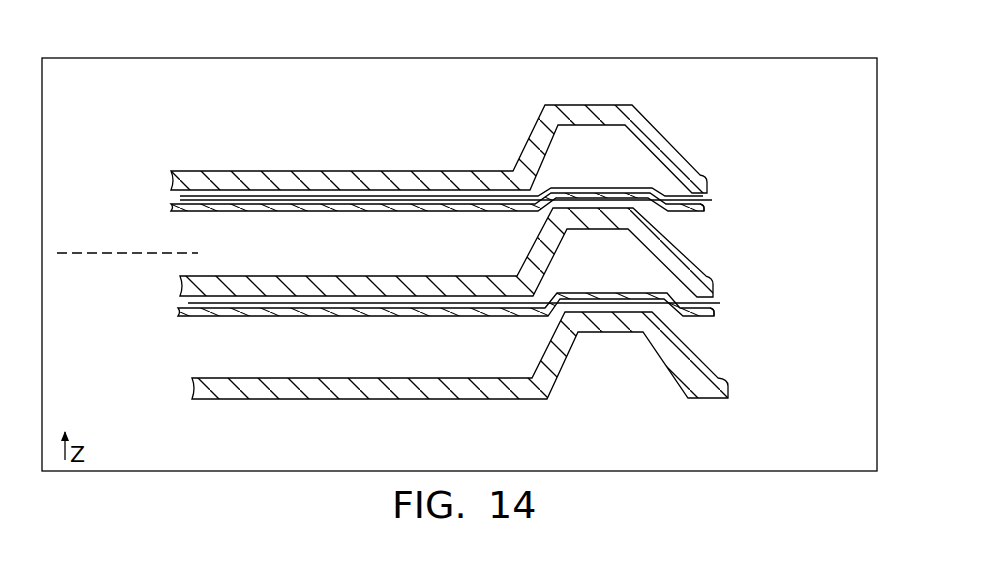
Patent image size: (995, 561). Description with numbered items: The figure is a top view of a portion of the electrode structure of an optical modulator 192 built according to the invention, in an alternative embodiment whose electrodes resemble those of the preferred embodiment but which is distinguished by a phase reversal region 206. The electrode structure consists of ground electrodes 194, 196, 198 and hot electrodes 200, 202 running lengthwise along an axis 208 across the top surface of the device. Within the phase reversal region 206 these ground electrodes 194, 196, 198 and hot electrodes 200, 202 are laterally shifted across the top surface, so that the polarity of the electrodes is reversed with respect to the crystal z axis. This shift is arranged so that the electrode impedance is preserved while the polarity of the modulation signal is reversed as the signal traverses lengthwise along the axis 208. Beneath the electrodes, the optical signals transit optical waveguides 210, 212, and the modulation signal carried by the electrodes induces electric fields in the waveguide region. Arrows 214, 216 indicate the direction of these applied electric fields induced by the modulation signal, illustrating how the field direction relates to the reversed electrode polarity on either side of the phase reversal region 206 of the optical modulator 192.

The optical modulator 192 is at (612, 50).
The ground electrode 194 is at (270, 177).
The ground electrode 196 is at (242, 283).
The ground electrode 198 is at (232, 388).
The hot electrode 200 is at (690, 214).
The hot electrode 202 is at (693, 318).
The phase reversal region 206 is at (617, 363).
The axis 208 is at (142, 253).
The optical waveguide 210 is at (404, 297).
The optical waveguide 212 is at (367, 197).
The arrow 214 is at (418, 195).
The arrow 216 is at (597, 204).